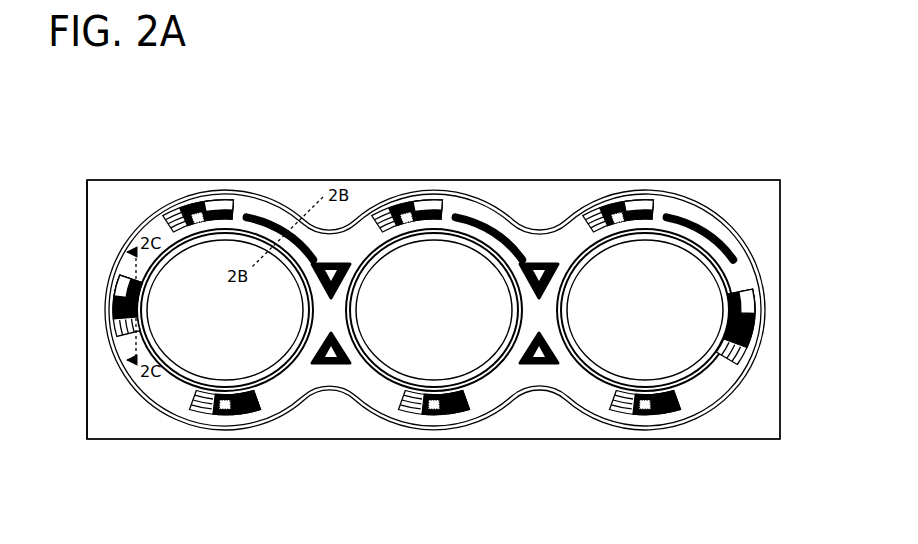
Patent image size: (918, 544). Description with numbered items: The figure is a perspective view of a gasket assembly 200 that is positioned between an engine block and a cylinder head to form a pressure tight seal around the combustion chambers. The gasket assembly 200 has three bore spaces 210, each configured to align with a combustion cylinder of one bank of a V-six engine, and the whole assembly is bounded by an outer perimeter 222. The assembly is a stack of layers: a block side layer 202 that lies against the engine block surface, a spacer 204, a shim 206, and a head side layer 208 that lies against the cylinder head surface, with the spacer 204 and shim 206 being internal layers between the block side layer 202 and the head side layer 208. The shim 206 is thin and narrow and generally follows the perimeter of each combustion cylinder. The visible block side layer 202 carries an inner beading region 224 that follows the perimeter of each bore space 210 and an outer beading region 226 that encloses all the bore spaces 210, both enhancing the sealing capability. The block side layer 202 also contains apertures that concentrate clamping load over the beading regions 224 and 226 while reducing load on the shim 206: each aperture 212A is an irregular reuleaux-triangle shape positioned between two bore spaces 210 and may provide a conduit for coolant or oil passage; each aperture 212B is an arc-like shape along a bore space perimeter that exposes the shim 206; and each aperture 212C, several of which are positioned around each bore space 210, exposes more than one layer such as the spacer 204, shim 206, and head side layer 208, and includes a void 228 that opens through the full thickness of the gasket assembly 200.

The gasket assembly 200 is at (556, 100).
The block side layer 202 is at (769, 211).
The spacer 204 is at (173, 207).
The shim 206 is at (224, 204).
The head side layer 208 is at (196, 210).
The bore space 210 is at (241, 319).
The aperture 212A is at (330, 367).
The aperture 212B is at (495, 224).
The aperture 212C is at (614, 199).
The outer perimeter of gasket assembly 222 is at (86, 249).
The inner beading region 224 is at (188, 392).
The outer beading region 226 is at (267, 193).
The void 228 is at (422, 204).